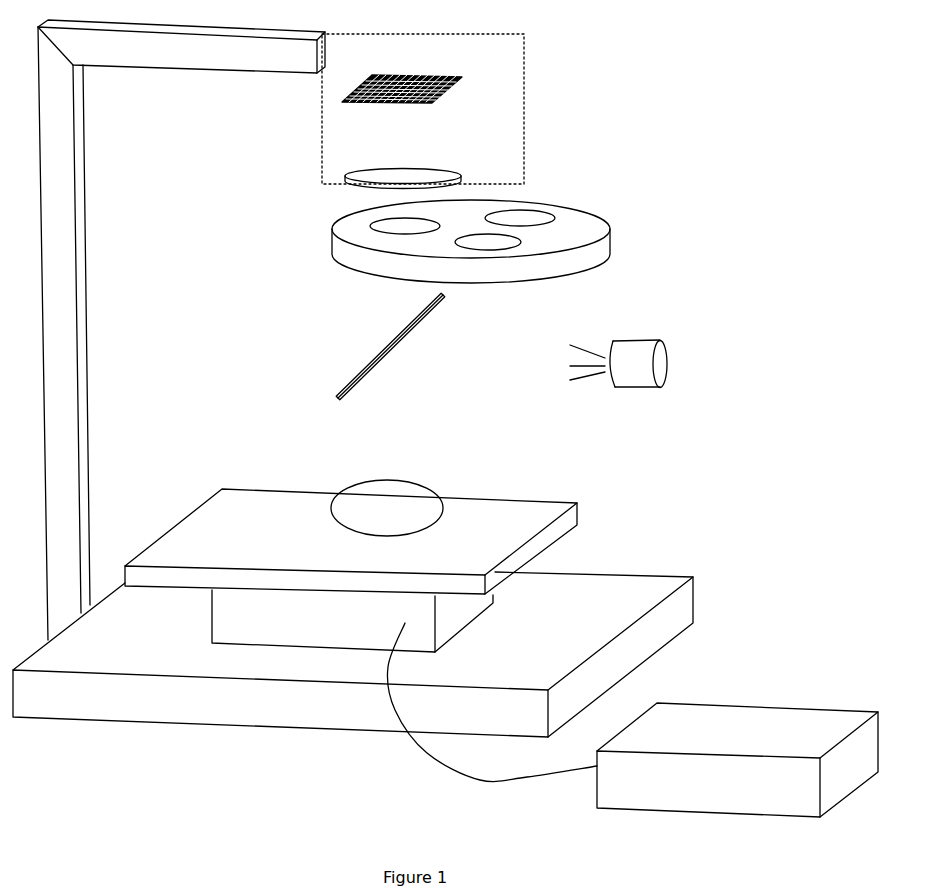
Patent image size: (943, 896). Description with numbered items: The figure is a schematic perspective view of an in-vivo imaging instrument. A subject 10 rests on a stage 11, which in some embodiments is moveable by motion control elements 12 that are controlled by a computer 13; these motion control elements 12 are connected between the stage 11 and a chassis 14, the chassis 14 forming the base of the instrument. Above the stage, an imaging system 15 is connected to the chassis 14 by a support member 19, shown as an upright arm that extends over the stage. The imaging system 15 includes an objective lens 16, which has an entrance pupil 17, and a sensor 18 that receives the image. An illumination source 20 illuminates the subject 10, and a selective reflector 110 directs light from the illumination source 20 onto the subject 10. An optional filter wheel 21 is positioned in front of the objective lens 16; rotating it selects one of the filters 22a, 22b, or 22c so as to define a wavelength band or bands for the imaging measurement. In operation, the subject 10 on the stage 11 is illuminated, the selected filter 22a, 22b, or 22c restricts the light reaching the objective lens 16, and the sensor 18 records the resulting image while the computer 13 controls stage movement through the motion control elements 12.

The subject 10 is at (353, 478).
The stage 11 is at (577, 528).
The motion control elements 12 is at (212, 620).
The computer 13 is at (617, 810).
The chassis 14 is at (88, 726).
The imaging system 15 is at (524, 70).
The objective lens 16 is at (426, 166).
The entrance pupil 17 is at (377, 183).
The sensor 18 is at (448, 90).
The support member 19 is at (175, 70).
The illumination source 20 is at (648, 389).
The filter wheel 21 is at (582, 268).
The filter 22a is at (403, 234).
The filter 22b is at (520, 238).
The filter 22c is at (547, 210).
The selective reflector 110 is at (338, 398).